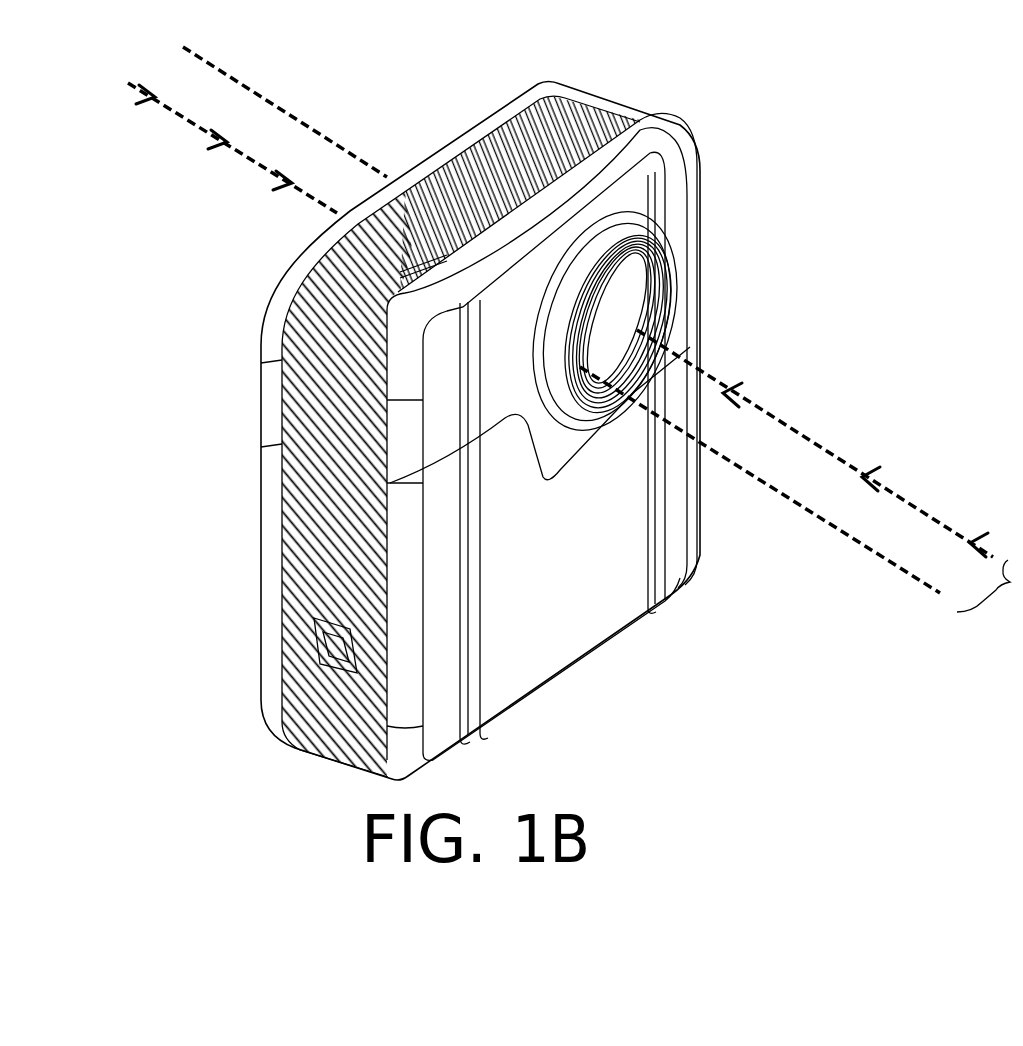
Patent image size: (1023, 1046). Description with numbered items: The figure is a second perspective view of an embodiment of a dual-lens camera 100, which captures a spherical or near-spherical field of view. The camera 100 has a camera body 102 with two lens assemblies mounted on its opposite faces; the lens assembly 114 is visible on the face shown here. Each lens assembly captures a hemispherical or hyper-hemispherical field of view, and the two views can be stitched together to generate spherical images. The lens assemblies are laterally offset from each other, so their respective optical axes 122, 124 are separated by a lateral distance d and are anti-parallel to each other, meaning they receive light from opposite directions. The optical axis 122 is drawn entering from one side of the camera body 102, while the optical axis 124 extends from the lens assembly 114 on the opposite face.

The dual-lens camera 100 is at (222, 294).
The camera body 102 is at (670, 182).
The lens assembly 114 is at (628, 293).
The optical axis 122 is at (196, 127).
The optical axis 124 is at (820, 447).